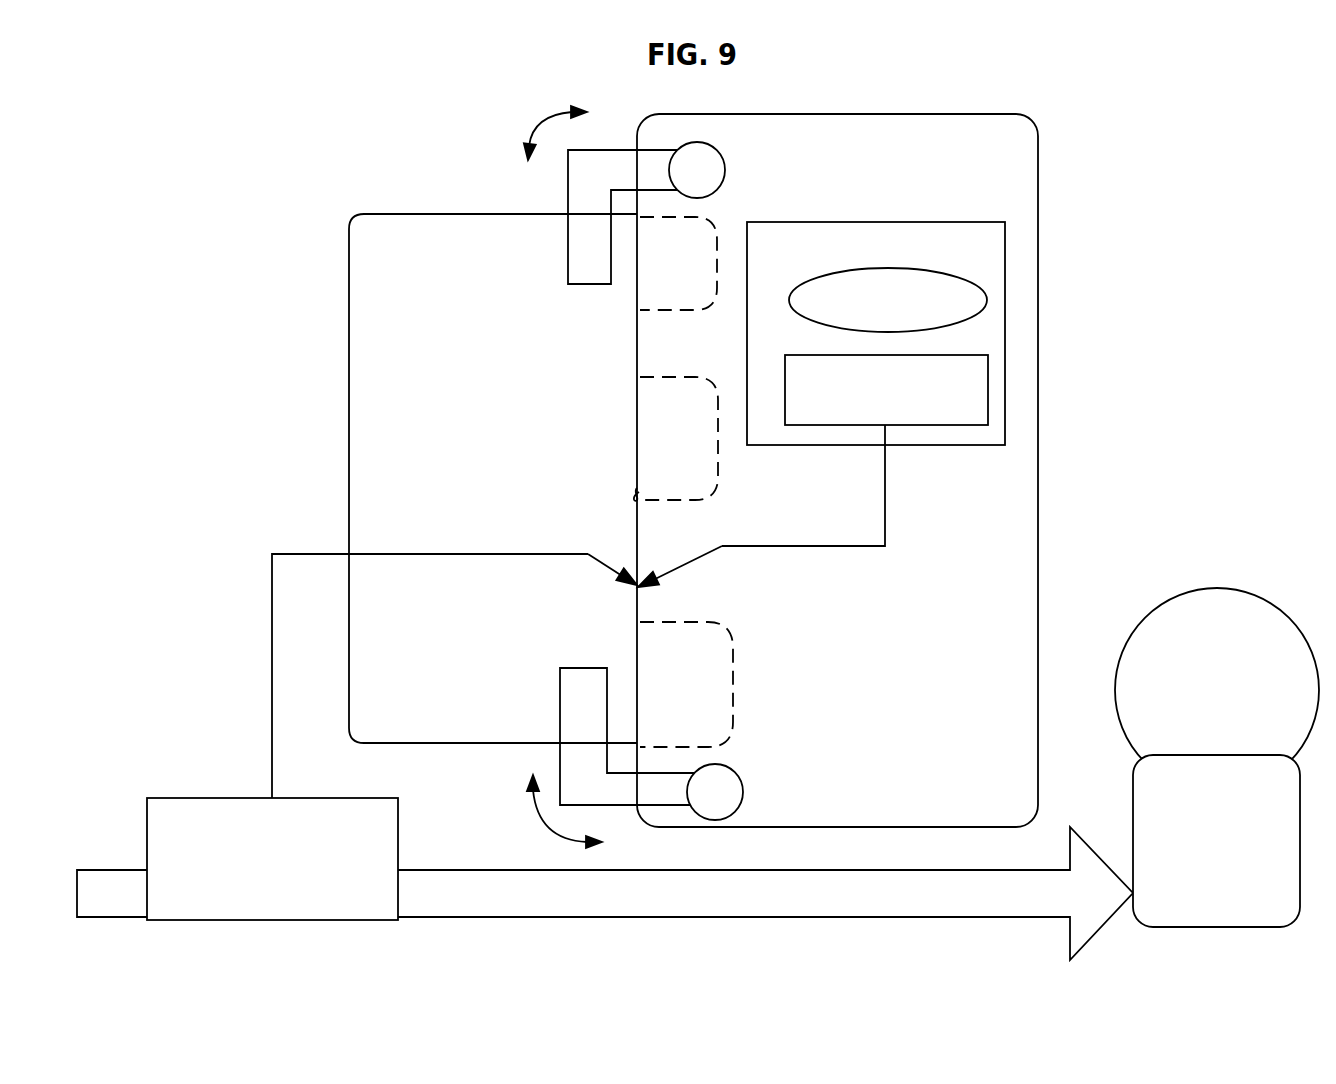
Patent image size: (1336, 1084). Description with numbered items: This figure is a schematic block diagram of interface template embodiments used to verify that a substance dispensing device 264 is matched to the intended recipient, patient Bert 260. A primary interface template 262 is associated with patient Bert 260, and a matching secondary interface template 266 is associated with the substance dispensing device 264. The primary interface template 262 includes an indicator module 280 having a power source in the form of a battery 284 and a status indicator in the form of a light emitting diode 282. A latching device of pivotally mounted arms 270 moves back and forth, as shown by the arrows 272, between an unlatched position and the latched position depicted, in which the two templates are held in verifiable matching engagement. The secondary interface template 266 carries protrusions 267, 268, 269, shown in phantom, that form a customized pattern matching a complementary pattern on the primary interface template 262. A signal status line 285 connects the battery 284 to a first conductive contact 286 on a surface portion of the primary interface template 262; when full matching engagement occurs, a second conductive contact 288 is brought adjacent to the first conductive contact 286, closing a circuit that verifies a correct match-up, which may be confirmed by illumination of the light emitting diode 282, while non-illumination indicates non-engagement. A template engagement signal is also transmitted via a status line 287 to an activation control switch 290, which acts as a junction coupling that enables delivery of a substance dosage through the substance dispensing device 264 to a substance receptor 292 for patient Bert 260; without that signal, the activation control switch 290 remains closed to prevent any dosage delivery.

The patient Bert 260 is at (1257, 644).
The primary interface template 262 is at (960, 691).
The substance dispensing device 264 is at (889, 904).
The secondary interface template 266 is at (478, 364).
The protrusion 267 is at (733, 678).
The protrusion 268 is at (705, 478).
The protrusion 269 is at (712, 230).
The pivotally mounted arms 270 is at (596, 283).
The arrows 272 is at (530, 132).
The indicator module 280 is at (918, 222).
The light emitting diode (LED) 282 is at (957, 317).
The battery 284 is at (970, 419).
The signal status line 285 is at (886, 510).
The first conductive contact 286 is at (703, 557).
The status line 287 is at (511, 553).
The second conductive contact 288 is at (596, 565).
The activation control switch 290 is at (372, 831).
The substance receptor 292 is at (1266, 914).